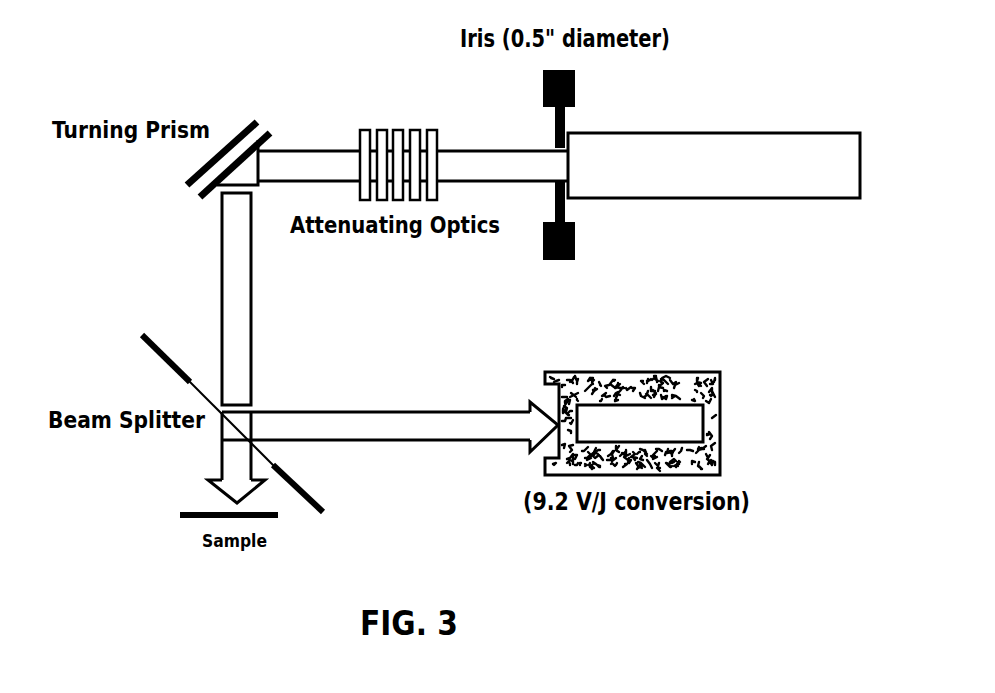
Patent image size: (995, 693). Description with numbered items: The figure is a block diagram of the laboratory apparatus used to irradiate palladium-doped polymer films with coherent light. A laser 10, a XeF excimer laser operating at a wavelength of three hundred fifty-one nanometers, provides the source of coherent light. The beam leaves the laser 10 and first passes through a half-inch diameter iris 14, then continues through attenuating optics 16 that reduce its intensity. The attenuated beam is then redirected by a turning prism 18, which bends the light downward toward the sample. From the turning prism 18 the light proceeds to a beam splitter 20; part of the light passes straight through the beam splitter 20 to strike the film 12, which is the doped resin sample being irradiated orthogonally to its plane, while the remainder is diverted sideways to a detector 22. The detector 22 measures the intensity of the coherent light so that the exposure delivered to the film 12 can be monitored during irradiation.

The laser 10 is at (714, 132).
The film 12 is at (276, 548).
The iris 14 is at (596, 165).
The attenuating optics 16 is at (368, 122).
The turning prism 18 is at (206, 121).
The beam splitter 20 is at (203, 423).
The detector 22 is at (687, 423).